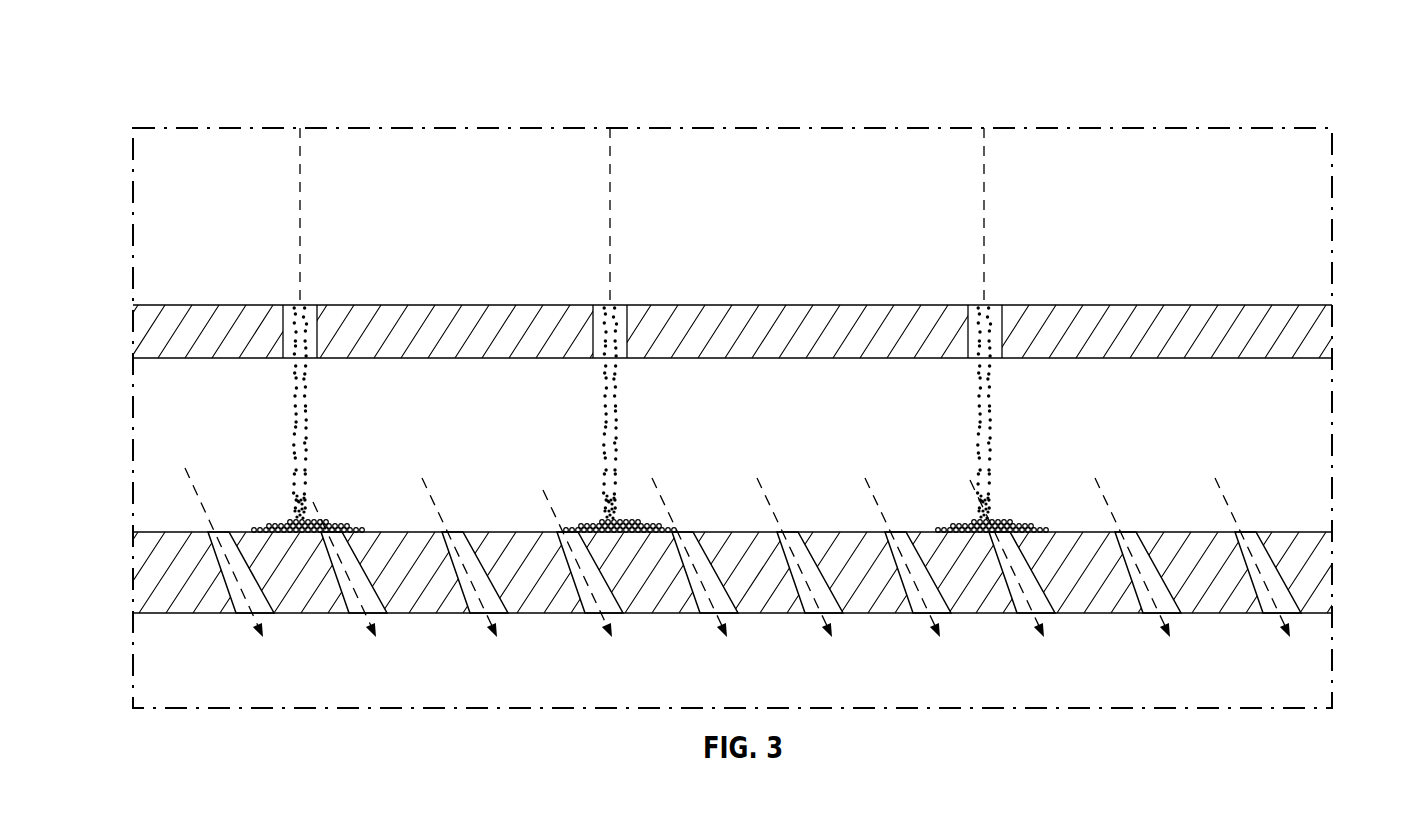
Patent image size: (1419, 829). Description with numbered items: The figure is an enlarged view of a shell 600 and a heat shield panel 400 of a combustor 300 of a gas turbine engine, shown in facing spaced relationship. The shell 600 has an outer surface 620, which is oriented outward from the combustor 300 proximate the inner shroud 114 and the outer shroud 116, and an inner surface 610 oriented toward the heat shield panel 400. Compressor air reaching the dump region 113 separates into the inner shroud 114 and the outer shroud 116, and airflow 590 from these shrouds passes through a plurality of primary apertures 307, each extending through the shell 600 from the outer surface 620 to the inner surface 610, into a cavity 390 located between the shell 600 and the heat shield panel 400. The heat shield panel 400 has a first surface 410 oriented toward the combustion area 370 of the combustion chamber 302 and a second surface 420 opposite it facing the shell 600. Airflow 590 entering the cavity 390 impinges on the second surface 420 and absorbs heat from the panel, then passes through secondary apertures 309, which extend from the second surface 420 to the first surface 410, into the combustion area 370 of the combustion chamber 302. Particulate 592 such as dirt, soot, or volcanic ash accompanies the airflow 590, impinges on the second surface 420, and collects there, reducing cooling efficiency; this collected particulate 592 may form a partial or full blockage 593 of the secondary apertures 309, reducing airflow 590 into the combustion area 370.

The combustor 300 is at (118, 101).
The airflow 590 is at (300, 177).
The dump region 113 is at (732, 216).
The inner shroud 114 is at (732, 216).
The outer shroud 116 is at (855, 203).
The primary apertures 307 is at (317, 328).
The outer surface 620 is at (1310, 305).
The shell 600 is at (1310, 328).
The inner surface 610 is at (1312, 358).
The cavity 390 is at (187, 396).
The particulate 592 is at (295, 432).
The second surface 420 is at (1323, 531).
The heat shield panel 400 is at (1308, 588).
The first surface 410 is at (1322, 613).
The blockage 593 is at (344, 544).
The secondary apertures 309 is at (1254, 587).
The combustion chamber 302 is at (805, 697).
The combustion area 370 is at (872, 697).